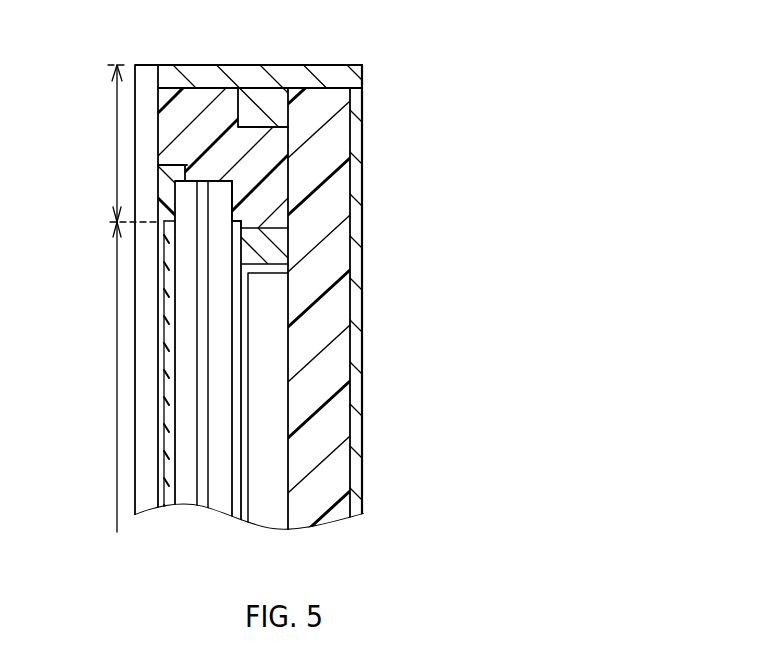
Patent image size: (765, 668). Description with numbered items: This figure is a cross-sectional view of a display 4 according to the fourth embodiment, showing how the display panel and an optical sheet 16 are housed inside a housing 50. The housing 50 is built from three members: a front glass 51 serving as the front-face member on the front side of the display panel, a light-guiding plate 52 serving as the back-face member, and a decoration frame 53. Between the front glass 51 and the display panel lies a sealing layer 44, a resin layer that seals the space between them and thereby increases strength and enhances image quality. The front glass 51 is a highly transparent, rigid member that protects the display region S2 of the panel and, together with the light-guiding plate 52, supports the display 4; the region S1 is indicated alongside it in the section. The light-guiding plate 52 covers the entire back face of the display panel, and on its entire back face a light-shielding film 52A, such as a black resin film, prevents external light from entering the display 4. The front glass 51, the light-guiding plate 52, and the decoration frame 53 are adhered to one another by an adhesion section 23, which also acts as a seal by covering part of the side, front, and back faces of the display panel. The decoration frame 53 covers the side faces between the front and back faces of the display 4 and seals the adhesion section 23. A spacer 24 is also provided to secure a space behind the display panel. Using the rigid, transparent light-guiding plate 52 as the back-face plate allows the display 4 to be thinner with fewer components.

The display 4 is at (393, 38).
The optical sheet 16 is at (272, 374).
The adhesion section 23 is at (170, 125).
The spacer 24 is at (270, 249).
The sealing layer 44 is at (165, 305).
The housing 50 is at (443, 62).
The front glass 51 is at (150, 150).
The light-guiding plate 52 is at (333, 200).
The light-shielding film 52A is at (353, 243).
The decoration frame 53 is at (365, 75).
The first section S1 is at (115, 168).
The display region S2 is at (115, 365).